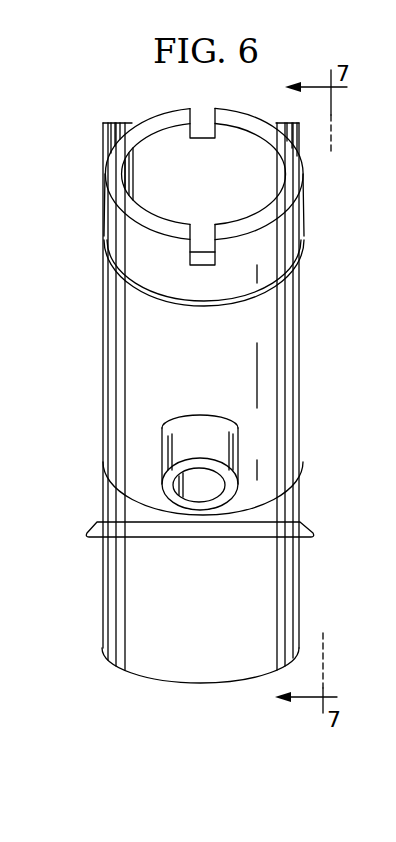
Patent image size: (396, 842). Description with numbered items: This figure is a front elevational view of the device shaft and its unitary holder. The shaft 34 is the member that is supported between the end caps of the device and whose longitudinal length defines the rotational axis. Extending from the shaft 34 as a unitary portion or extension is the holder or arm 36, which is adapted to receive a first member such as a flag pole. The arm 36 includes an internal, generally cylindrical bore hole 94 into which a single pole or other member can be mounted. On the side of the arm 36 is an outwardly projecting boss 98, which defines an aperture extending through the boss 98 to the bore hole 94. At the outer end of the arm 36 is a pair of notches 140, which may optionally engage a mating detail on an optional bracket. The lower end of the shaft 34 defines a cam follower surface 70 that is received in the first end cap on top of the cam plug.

The holder or arm 36 is at (112, 350).
The internal cylindrical bore hole 94 is at (273, 170).
The notches 140 is at (208, 252).
The outwardly projecting boss 98 is at (230, 442).
The shaft 34 is at (306, 553).
The cam follower surface 70 is at (125, 665).